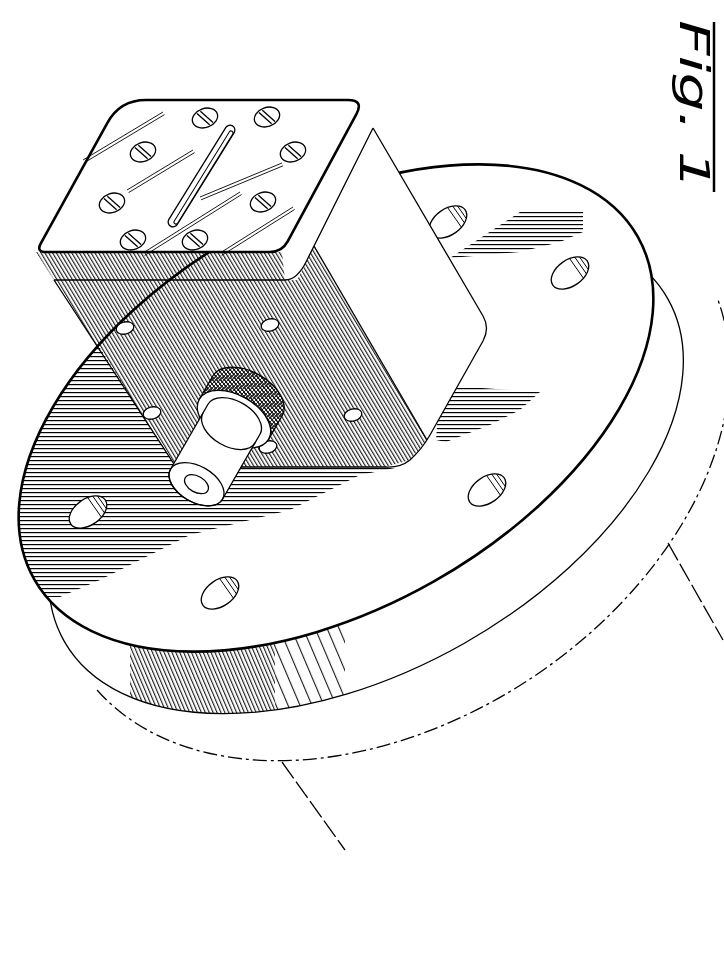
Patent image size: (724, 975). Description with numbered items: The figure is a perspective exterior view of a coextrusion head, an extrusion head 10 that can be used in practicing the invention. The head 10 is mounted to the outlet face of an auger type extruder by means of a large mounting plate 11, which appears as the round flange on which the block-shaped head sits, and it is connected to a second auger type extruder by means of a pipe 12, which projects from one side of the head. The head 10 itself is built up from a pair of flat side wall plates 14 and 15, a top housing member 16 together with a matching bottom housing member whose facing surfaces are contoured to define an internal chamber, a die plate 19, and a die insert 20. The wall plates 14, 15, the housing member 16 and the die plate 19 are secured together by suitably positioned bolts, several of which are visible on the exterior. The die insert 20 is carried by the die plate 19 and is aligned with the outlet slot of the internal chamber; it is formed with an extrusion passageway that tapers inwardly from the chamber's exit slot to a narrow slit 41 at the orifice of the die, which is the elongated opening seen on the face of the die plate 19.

The extrusion head 10 is at (246, 284).
The mounting plate 11 is at (582, 195).
The pipe 12 is at (178, 472).
The flat side wall plate 14 is at (108, 332).
The flat side wall plate 15 is at (262, 291).
The top housing member 16 is at (390, 238).
The die plate 19 is at (216, 166).
The die insert 20 is at (203, 148).
The narrow slit 41 is at (183, 196).